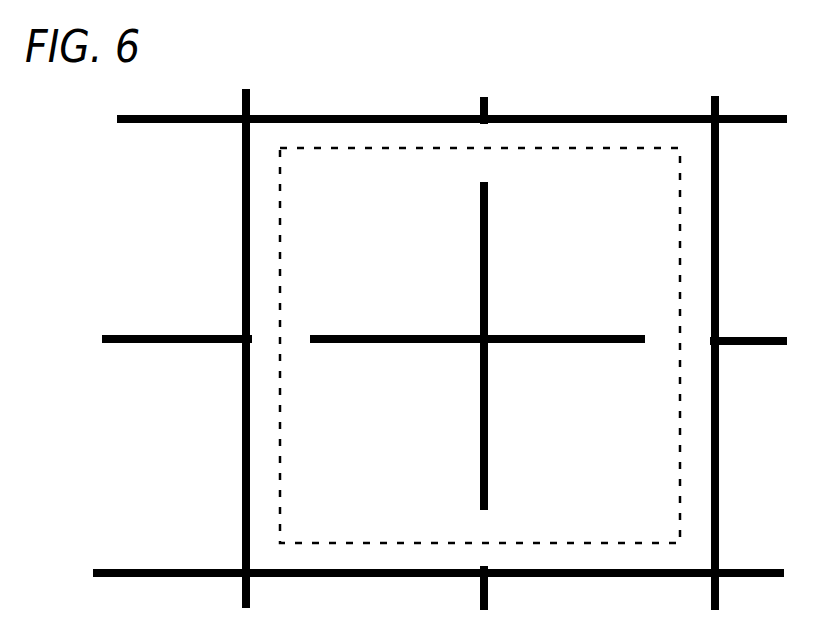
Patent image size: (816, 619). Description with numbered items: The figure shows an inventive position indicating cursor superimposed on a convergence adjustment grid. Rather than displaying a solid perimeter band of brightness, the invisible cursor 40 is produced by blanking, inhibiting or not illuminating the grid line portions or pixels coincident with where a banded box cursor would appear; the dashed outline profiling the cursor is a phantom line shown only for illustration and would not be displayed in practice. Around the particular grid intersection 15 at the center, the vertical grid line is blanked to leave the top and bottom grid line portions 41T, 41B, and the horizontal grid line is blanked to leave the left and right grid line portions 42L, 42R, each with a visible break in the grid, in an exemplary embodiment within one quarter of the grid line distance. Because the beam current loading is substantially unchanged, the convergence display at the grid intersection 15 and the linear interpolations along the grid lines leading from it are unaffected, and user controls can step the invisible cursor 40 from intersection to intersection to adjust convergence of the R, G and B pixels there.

The invisible cursor 40 is at (655, 150).
The top vertical grid line portion 41T is at (478, 158).
The bottom vertical grid line portion 41B is at (483, 522).
The left horizontal grid line portion 42L is at (290, 339).
The right horizontal grid line portion 42R is at (667, 343).
The grid intersection 15 is at (480, 343).